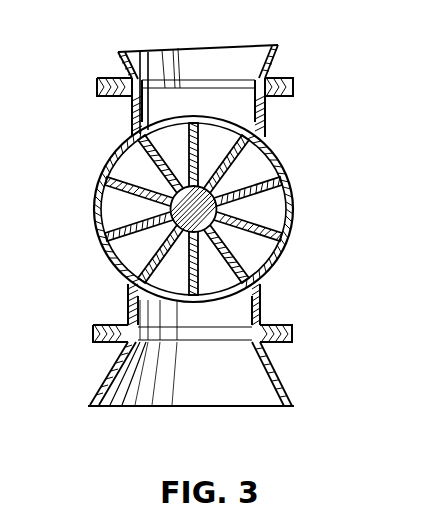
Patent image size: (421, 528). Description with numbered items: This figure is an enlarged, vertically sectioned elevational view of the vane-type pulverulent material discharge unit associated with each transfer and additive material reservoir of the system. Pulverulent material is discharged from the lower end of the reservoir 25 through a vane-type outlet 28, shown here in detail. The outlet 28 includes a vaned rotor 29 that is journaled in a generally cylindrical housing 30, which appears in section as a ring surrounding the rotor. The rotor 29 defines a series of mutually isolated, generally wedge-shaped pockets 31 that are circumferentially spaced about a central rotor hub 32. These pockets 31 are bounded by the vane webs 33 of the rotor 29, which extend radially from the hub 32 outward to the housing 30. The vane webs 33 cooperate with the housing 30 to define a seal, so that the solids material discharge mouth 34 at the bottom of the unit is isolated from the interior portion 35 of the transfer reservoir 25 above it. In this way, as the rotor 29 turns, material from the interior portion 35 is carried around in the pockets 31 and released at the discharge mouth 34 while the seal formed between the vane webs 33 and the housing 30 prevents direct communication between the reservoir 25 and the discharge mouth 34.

The reservoir 25 is at (270, 63).
The vane-type outlet 28 is at (265, 120).
The vaned rotor 29 is at (266, 241).
The cylindrical housing 30 is at (288, 178).
The pockets 31 is at (256, 175).
The rotor hub 32 is at (170, 205).
The vane webs 33 is at (98, 191).
The solids material discharge mouth 34 is at (243, 383).
The interior portion 35 is at (212, 60).